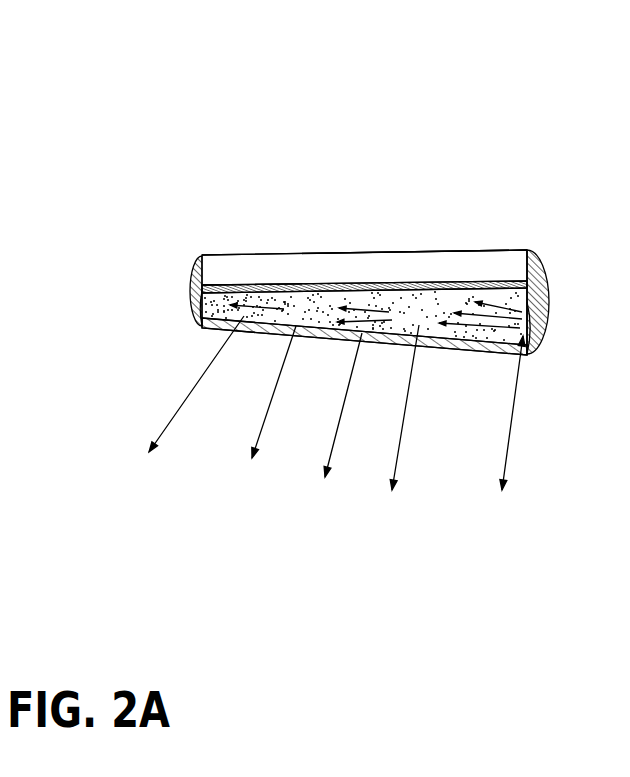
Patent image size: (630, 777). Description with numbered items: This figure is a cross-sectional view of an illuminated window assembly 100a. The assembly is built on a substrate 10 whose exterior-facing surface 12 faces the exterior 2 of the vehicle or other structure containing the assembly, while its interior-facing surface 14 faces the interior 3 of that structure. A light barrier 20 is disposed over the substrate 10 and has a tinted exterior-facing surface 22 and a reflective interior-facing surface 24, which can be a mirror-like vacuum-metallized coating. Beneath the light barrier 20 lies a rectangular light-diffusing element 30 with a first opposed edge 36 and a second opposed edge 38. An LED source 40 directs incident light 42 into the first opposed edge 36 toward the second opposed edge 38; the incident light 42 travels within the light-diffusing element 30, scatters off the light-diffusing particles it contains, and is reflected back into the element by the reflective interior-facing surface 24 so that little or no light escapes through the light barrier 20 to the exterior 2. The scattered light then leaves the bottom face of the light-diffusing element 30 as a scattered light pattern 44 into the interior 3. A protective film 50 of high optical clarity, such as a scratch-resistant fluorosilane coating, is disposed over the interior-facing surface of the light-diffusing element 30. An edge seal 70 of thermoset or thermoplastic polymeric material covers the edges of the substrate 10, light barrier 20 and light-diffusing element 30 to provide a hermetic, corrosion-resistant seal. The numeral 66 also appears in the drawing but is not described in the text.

The illuminated window assembly 100a is at (483, 133).
The substrate 10 is at (493, 258).
The exterior-facing surface 12 is at (452, 248).
The exterior 2 is at (420, 186).
The interior 3 is at (297, 434).
The tinted exterior-facing surface 22 is at (286, 283).
The light barrier 20 is at (262, 285).
The second opposed edge 38 is at (222, 285).
The reflective interior-facing surface 24 is at (288, 298).
The interior-facing surface 14 is at (443, 288).
The first opposed edge 36 is at (502, 350).
The incident light 42 is at (363, 337).
The scattered light pattern 44 is at (395, 458).
The edge seal 70 is at (190, 292).
The light-diffusing element 30 is at (540, 293).
The LED source 40 is at (535, 312).
The protective film 50 is at (216, 330).
The element 66 is at (17, 189).